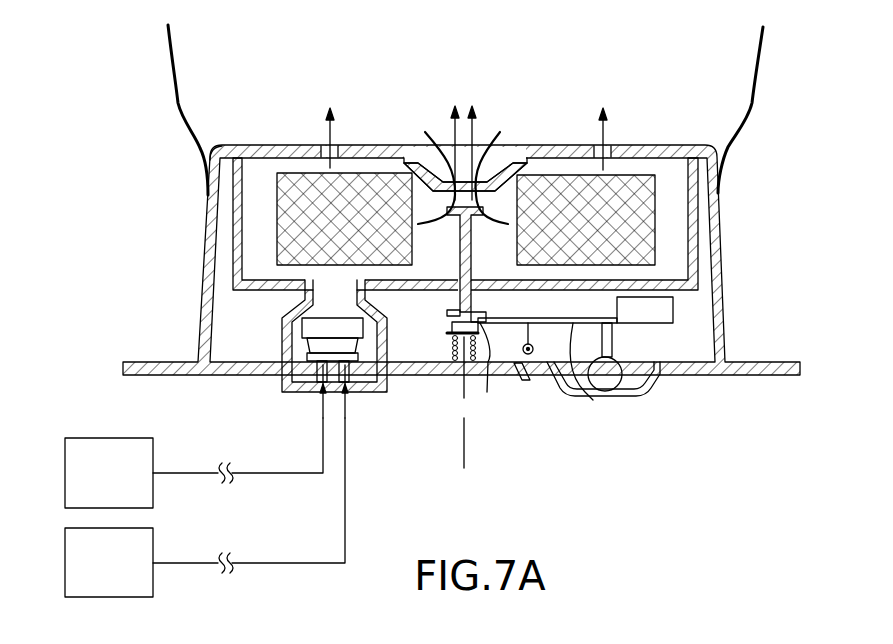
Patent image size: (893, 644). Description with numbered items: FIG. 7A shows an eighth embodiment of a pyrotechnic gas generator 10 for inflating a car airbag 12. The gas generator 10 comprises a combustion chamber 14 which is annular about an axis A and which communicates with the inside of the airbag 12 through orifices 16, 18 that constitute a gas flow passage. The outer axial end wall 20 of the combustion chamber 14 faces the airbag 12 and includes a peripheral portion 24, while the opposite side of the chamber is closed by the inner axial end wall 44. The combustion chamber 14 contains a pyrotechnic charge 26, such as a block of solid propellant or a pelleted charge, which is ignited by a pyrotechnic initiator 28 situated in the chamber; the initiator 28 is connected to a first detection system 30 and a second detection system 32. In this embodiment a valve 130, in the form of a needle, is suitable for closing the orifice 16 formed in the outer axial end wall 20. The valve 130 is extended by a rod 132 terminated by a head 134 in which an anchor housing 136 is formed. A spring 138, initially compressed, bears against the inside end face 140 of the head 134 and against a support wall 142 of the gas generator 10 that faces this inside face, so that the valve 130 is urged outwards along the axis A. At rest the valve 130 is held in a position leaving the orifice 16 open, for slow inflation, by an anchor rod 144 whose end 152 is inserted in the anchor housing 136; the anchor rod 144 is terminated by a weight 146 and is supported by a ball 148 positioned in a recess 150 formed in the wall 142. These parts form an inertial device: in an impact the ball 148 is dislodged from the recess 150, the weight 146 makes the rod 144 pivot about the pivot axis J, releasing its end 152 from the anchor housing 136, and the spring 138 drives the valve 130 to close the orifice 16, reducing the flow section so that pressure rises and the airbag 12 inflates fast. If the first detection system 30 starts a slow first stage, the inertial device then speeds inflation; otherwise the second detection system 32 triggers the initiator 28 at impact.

The pyrotechnic gas generator 10 is at (692, 104).
The car airbag 12 is at (173, 47).
The combustion chamber 14 is at (670, 202).
The orifice 16 is at (434, 165).
The orifice 18 is at (328, 149).
The outer axial end wall 20 is at (220, 143).
The peripheral portion 24 is at (255, 145).
The pyrotechnic charge 26 is at (292, 226).
The pyrotechnic initiator 28 is at (313, 329).
The first detection system 30 is at (97, 487).
The second detection system 32 is at (97, 577).
The inner axial end wall 44 is at (680, 273).
The valve 130 is at (499, 165).
The rod 132 is at (470, 225).
The head 134 is at (456, 309).
The anchor housing 136 is at (455, 368).
The spring 138 is at (450, 343).
The inside end face 140 is at (484, 370).
The support wall 142 is at (520, 370).
The anchor rod 144 is at (603, 376).
The weight 146 is at (668, 310).
The ball 148 is at (612, 365).
The recess 150 is at (630, 393).
The end 152 is at (486, 318).
The pivot axis J is at (535, 348).
The axis A is at (464, 455).